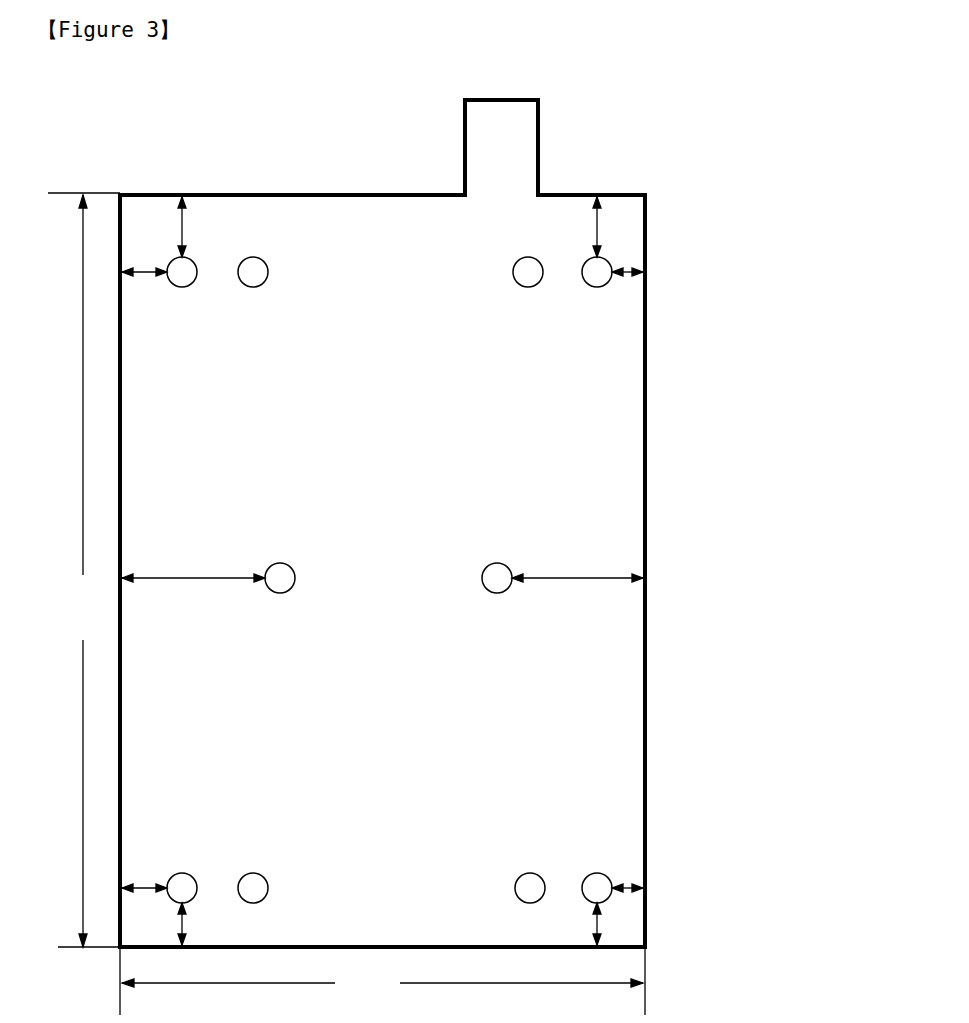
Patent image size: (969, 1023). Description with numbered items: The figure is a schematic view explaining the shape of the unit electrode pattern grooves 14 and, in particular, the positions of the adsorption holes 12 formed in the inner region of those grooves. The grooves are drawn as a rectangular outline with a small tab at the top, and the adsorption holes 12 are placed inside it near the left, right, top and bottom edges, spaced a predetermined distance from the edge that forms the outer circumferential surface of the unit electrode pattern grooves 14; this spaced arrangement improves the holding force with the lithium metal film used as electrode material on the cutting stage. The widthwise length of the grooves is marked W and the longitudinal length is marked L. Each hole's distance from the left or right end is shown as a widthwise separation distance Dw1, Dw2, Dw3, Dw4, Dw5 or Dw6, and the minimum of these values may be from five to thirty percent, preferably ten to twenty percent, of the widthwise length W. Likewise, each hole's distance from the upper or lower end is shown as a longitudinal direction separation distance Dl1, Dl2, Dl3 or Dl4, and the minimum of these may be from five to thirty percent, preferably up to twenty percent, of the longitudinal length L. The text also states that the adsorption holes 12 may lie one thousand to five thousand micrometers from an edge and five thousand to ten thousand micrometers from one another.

The adsorption holes 12 is at (247, 257).
The unit electrode pattern grooves 14 is at (625, 193).
The longitudinal direction separation distance Dl1 is at (197, 227).
The widthwise separation distance Dw1 is at (143, 277).
The longitudinal direction separation distance Dl2 is at (612, 227).
The widthwise separation distance Dw2 is at (628, 275).
The widthwise separation distance Dw3 is at (142, 886).
The longitudinal direction separation distance Dl3 is at (198, 925).
The widthwise separation distance Dw4 is at (622, 886).
The longitudinal direction separation distance Dl4 is at (614, 925).
The widthwise separation distance Dw5 is at (212, 575).
The widthwise separation distance Dw6 is at (595, 575).
The longitudinal length L is at (84, 570).
The widthwise length W is at (382, 981).